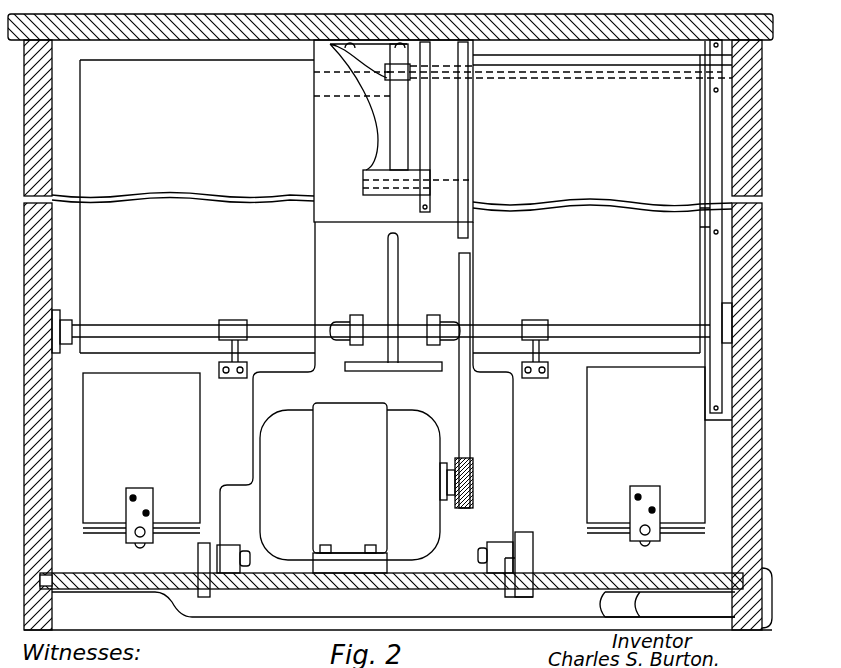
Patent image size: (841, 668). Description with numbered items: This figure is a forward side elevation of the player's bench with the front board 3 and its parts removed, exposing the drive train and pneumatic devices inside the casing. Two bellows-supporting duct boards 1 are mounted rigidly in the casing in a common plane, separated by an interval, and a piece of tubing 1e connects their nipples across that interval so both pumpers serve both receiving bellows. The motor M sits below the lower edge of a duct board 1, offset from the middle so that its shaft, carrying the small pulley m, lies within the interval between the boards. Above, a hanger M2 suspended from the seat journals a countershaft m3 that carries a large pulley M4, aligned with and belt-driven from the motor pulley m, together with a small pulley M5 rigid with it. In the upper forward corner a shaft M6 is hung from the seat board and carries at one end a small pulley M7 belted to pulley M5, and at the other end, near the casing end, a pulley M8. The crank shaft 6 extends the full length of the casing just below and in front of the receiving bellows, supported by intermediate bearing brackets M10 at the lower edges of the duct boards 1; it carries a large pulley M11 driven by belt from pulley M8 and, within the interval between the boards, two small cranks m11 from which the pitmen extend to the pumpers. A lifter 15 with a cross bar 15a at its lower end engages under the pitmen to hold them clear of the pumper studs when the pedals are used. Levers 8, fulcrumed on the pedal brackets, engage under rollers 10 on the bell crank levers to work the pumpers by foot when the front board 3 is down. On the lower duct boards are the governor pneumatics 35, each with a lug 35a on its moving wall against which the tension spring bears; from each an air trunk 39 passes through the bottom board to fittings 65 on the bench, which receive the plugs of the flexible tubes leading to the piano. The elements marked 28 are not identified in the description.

The duct board 1 is at (237, 392).
The tubing 1e is at (337, 86).
The front board 3 is at (117, 68).
The crank shaft 6 is at (628, 325).
The lever 8 is at (317, 40).
The roller 10 is at (227, 545).
The lifter 15 is at (398, 288).
The cross bar 15a is at (366, 371).
The casing 28 is at (392, 204).
The governor pneumatic 35 is at (394, 450).
The lug 35a is at (150, 543).
The air trunk 39 is at (516, 605).
The fitting 65 is at (735, 607).
The motor M is at (357, 488).
The motor pulley m is at (473, 468).
The hanger M2 is at (378, 135).
The countershaft m3 is at (445, 180).
The large pulley M4 is at (468, 126).
The small pulley M5 is at (424, 203).
The shaft M6 is at (614, 68).
The small pulley M7 is at (425, 88).
The pulley M8 is at (710, 86).
The bracket M10 is at (240, 322).
The crank m11 is at (338, 322).
The large pulley M11 is at (716, 398).